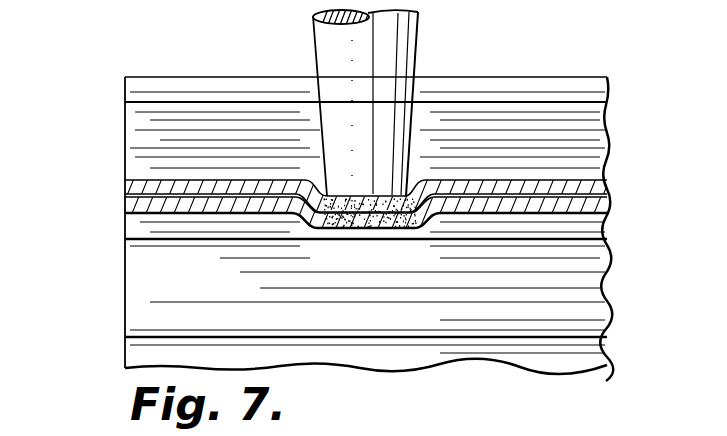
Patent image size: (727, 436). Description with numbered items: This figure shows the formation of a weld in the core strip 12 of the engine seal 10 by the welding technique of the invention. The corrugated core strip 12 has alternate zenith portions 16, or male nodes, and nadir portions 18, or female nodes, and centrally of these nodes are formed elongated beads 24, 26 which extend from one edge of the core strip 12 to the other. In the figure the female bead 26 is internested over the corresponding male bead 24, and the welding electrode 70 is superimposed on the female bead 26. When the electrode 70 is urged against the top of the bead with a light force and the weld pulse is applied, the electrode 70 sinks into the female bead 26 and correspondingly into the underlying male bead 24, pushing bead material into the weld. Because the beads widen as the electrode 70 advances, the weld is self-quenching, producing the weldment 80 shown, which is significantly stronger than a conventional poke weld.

The engine seal 10 is at (165, 70).
The core strip 12 is at (614, 127).
The zenith portion 16 is at (531, 345).
The nadir portion 18 is at (546, 98).
The male bead 24 is at (600, 203).
The female bead 26 is at (600, 186).
The welding electrode 70 is at (325, 38).
The weldment 80 is at (330, 198).